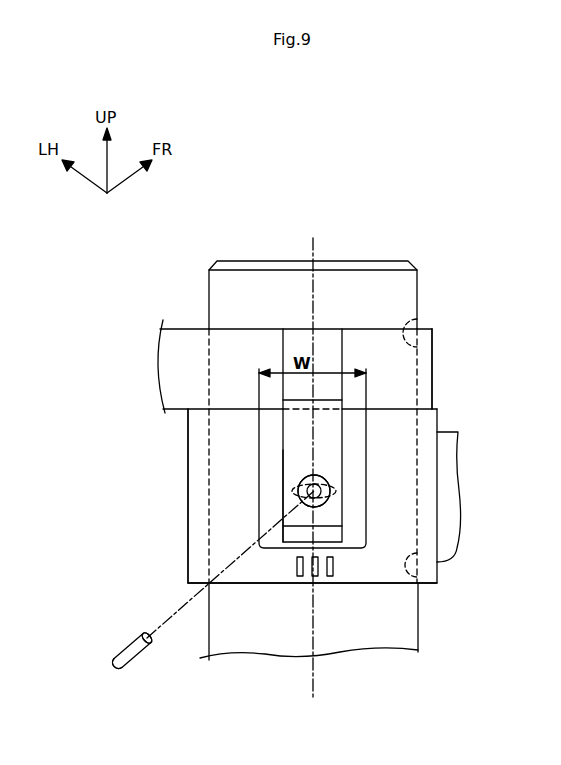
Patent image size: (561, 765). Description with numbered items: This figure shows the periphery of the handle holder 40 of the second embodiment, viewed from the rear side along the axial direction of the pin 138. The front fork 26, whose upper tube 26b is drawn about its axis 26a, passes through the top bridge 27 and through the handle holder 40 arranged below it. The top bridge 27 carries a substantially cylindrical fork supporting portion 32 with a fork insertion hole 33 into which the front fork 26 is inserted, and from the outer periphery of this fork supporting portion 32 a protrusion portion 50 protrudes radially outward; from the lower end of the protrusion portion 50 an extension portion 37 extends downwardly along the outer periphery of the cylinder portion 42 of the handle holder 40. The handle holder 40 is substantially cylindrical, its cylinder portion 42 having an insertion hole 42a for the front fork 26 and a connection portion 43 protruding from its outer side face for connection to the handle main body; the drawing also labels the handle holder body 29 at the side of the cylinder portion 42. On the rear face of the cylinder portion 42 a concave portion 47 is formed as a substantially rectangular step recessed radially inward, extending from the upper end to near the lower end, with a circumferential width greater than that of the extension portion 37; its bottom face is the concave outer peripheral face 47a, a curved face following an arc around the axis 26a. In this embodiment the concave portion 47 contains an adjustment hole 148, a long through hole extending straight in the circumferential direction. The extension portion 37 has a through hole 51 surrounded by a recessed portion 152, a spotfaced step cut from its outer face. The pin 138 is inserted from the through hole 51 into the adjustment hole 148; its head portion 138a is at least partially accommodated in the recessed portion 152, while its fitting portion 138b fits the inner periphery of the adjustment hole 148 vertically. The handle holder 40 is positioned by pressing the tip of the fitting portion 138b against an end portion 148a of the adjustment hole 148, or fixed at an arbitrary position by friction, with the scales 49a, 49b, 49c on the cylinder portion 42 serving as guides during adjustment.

The front fork 26 is at (422, 279).
The axis of the front fork 26a is at (313, 245).
The upper tube 26b is at (418, 636).
The top bridge 27 is at (176, 322).
The holder body 29 is at (182, 533).
The fork supporting portion 32 is at (432, 355).
The fork insertion hole 33 is at (417, 320).
The extension portion 37 is at (283, 452).
The handle holder 40 is at (187, 549).
The cylinder portion 42 is at (197, 566).
The insertion hole 42a is at (417, 577).
The connection portion 43 is at (453, 543).
The concave portion 47 is at (252, 482).
The concave outer peripheral face 47a is at (283, 507).
The scale 49a is at (299, 576).
The scale 49b is at (314, 576).
The scale 49c is at (330, 576).
The protrusion portion 50 is at (297, 340).
The through hole 51 is at (329, 501).
The pin 138 is at (140, 662).
The head portion 138a is at (117, 664).
The fitting portion 138b is at (146, 645).
The adjustment hole 148 is at (330, 476).
The end portion of the adjustment hole 148a is at (292, 488).
The recessed portion 152 is at (318, 499).